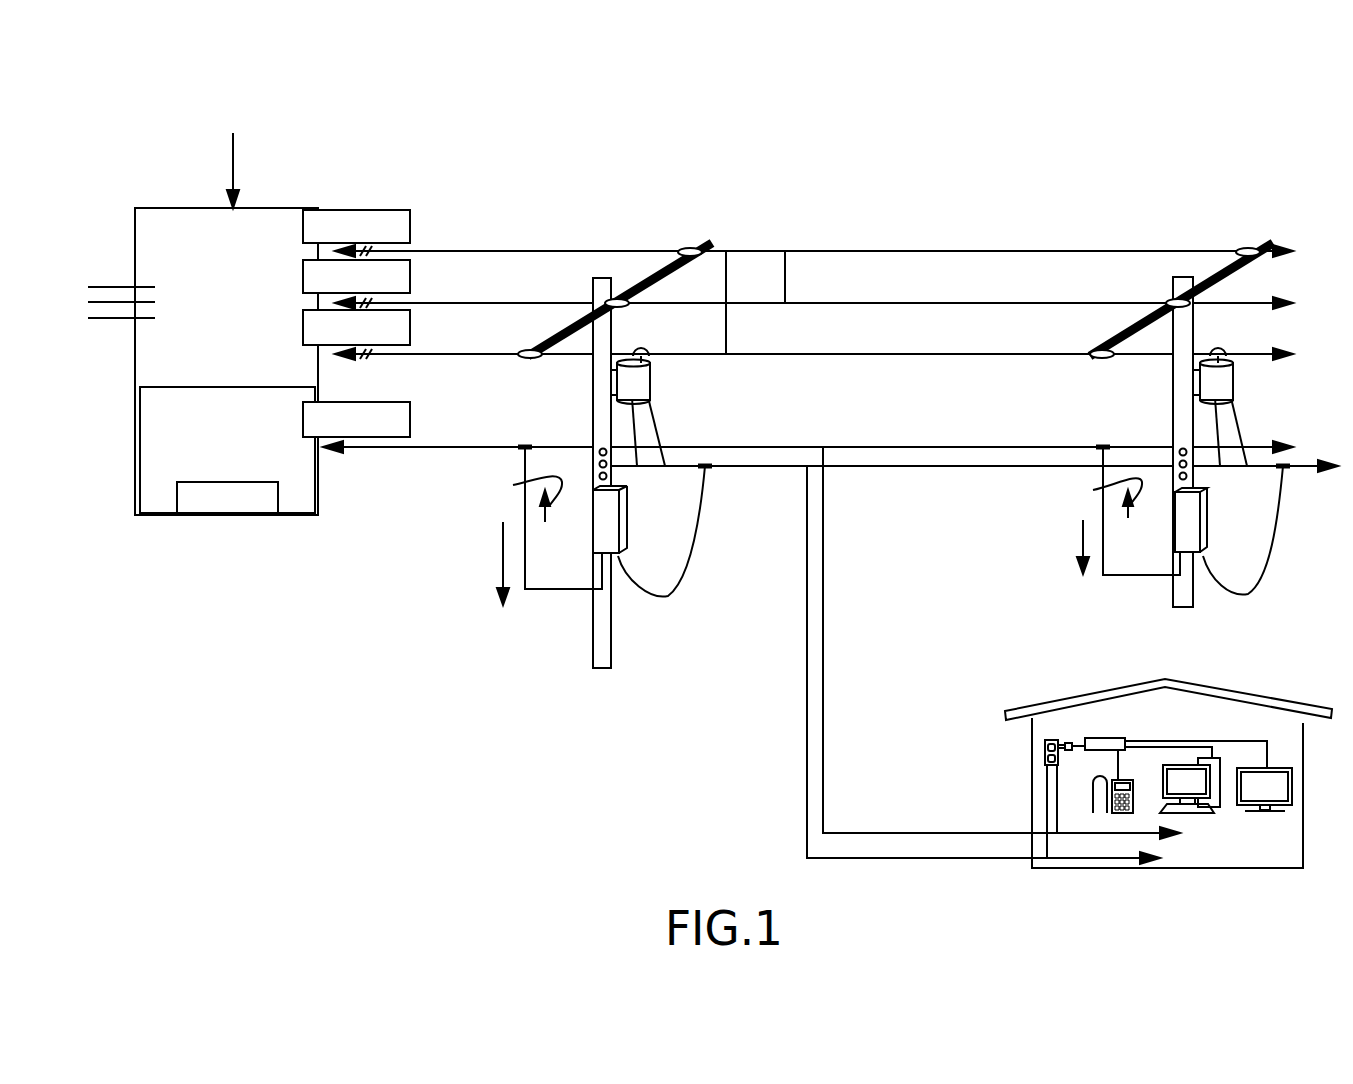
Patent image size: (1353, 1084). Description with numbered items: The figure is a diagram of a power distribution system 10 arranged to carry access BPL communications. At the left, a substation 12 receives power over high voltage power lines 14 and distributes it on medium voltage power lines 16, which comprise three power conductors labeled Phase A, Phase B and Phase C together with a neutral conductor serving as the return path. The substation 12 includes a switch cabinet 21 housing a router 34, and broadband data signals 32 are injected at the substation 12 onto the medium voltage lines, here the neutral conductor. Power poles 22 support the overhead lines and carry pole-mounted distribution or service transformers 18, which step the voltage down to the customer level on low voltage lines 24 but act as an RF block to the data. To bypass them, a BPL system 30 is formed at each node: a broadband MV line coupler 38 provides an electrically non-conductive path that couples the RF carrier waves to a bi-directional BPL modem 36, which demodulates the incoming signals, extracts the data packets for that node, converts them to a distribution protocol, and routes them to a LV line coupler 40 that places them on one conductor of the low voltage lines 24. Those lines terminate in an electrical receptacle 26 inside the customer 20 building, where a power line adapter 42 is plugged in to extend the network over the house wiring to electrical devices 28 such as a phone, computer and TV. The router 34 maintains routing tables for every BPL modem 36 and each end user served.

The power distribution system 10 is at (806, 241).
The substation 12 is at (135, 235).
The high voltage power lines 14 is at (100, 287).
The medium voltage power lines 16 is at (477, 447).
The distribution or service transformer 18 is at (655, 380).
The customer 20 is at (1290, 703).
The switch cabinet 21 is at (237, 466).
The power pole 22 is at (594, 250).
The low voltage lines 24 is at (826, 625).
The electrical receptacle 26 is at (1045, 750).
The electrical device 28 is at (1188, 766).
The BPL system 30 is at (484, 635).
The broadband data signals 32 is at (245, 129).
The router 34 is at (280, 500).
The BPL modem 36 is at (592, 520).
The broadband MV line coupler 38 is at (524, 443).
The LV line coupler 40 is at (700, 468).
The power line adapter 42 is at (1112, 738).